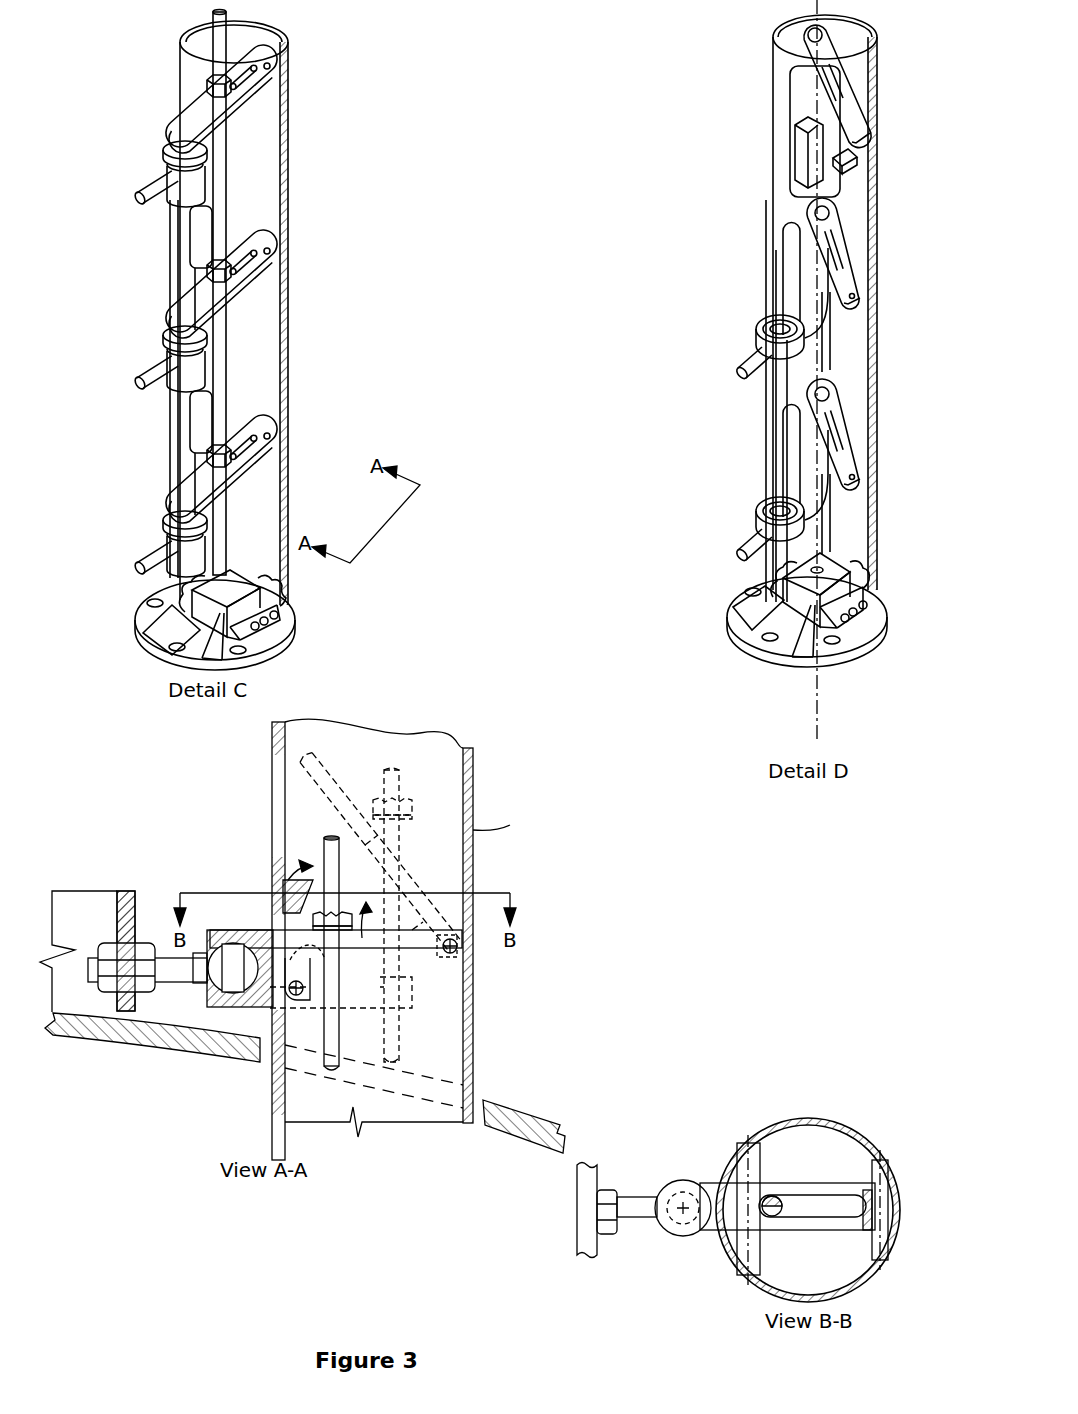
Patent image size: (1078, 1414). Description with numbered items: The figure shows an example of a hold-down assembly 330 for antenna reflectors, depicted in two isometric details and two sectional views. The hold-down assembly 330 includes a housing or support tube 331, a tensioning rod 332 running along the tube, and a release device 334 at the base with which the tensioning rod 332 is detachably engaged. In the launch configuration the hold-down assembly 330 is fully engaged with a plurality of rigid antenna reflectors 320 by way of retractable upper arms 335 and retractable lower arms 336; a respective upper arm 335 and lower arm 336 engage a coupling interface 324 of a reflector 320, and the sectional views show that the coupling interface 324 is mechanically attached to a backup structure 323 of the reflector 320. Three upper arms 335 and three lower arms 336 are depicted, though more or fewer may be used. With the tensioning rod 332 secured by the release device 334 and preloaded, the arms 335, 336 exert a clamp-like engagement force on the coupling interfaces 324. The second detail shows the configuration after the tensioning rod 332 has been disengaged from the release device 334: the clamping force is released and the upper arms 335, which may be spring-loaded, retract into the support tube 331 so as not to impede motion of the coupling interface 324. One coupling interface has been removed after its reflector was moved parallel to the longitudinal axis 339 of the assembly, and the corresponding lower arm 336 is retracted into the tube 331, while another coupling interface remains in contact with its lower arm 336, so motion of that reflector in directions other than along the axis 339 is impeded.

The hold-down assembly 330 is at (155, 28).
The housing (support tube) 331 is at (288, 130).
The tensioning rod 332 is at (225, 222).
The coupling interface 324 is at (205, 987).
The retractable upper arm 335 is at (192, 494).
The retractable lower arm 336 is at (192, 575).
The release device 334 is at (290, 615).
The longitudinal axis 339 is at (812, 690).
The backup structure 323 is at (127, 910).
The antenna reflector (rigid reflector) 320 is at (72, 1040).